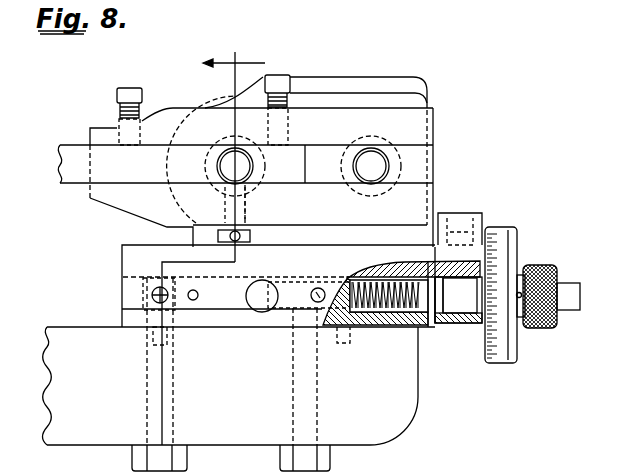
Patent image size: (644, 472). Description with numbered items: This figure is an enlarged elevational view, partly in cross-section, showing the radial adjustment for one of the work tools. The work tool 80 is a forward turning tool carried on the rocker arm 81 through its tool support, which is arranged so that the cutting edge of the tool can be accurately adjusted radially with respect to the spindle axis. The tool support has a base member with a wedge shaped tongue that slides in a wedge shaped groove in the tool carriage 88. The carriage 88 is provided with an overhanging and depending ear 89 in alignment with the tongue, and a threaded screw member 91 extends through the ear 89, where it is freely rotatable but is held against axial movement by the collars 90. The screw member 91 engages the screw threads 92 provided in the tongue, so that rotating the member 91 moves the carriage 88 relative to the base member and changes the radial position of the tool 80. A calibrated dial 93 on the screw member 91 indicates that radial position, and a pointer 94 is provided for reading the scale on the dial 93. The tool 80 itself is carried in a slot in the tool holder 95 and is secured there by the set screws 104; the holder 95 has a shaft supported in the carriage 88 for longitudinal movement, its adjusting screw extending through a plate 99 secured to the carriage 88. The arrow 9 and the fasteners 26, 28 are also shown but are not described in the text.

The direction of movement arrow 9 is at (234, 157).
The bolt 26 is at (244, 375).
The bolt 28 is at (337, 390).
The work tool 80 is at (72, 147).
The rocker arm 81 is at (230, 393).
The tool carriage 88 is at (344, 261).
The ear 89 is at (467, 324).
The collars 90 is at (447, 324).
The threaded screw member 91 is at (420, 330).
The screw threads 92 is at (389, 327).
The dial 93 is at (505, 232).
The pointer 94 is at (474, 213).
The tool holder 95 is at (429, 121).
The plate 99 is at (516, 368).
The set screws 104 is at (132, 90).